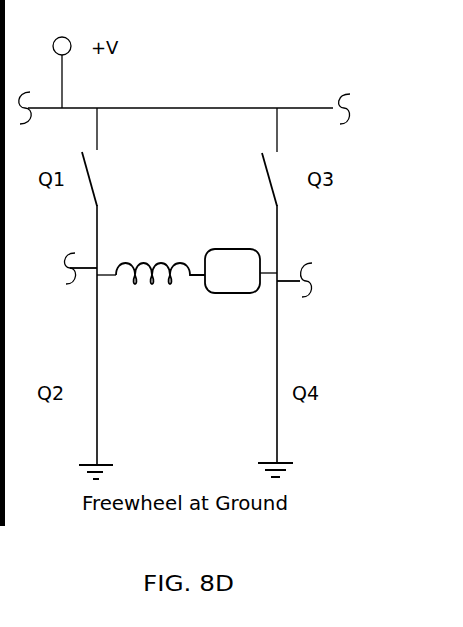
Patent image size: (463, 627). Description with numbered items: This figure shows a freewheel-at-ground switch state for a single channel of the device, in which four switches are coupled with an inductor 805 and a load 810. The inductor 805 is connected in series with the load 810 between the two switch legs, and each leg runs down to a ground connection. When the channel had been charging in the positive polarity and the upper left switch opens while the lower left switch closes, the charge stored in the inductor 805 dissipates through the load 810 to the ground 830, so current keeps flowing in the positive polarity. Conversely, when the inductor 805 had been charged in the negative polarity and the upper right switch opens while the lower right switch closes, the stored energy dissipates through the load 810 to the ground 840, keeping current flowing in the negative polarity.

The inductor 805 is at (147, 270).
The load 810 is at (221, 283).
The ground 830 is at (290, 468).
The ground 840 is at (88, 473).